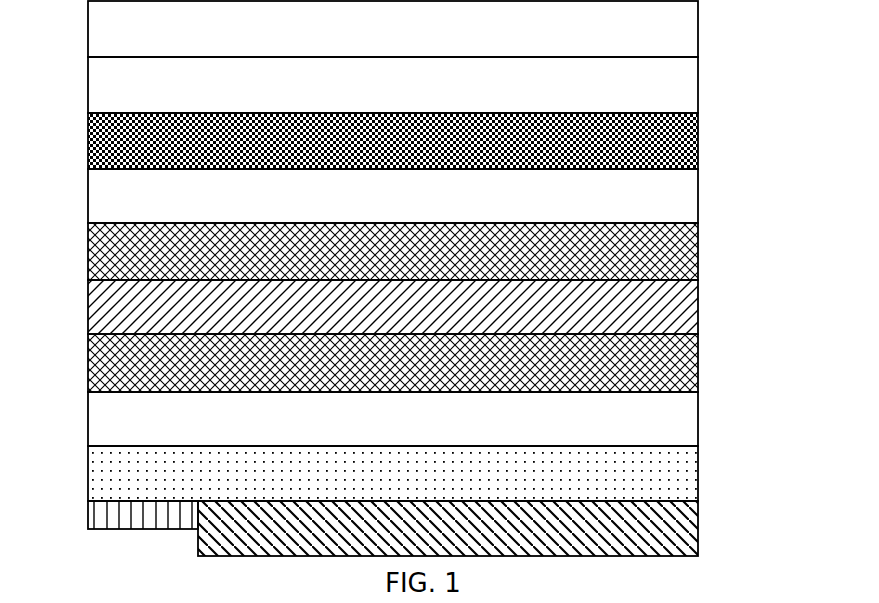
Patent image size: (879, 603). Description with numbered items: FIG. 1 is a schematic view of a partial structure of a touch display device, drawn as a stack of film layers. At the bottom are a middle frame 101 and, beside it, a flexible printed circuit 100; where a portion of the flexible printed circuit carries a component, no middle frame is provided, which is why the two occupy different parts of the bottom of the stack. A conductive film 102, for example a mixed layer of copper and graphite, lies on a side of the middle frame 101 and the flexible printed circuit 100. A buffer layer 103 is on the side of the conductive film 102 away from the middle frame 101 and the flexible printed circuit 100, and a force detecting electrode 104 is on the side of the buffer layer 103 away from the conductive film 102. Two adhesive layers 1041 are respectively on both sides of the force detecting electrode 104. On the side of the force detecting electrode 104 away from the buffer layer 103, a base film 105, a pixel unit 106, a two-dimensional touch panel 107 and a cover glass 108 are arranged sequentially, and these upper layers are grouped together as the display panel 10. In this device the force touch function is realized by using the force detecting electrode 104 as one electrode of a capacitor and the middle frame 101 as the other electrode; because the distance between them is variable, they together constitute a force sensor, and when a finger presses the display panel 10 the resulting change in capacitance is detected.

The display panel 10 is at (462, 112).
The flexible printed circuit 100 is at (115, 515).
The middle frame 101 is at (670, 528).
The conductive film 102 is at (670, 473).
The buffer layer 103 is at (670, 418).
The force detecting electrode 104 is at (670, 307).
The adhesive layers 1041 is at (670, 251).
The base film 105 is at (434, 196).
The pixel unit 106 is at (670, 141).
The two-dimensional touch panel 107 is at (670, 86).
The cover glass 108 is at (670, 30).